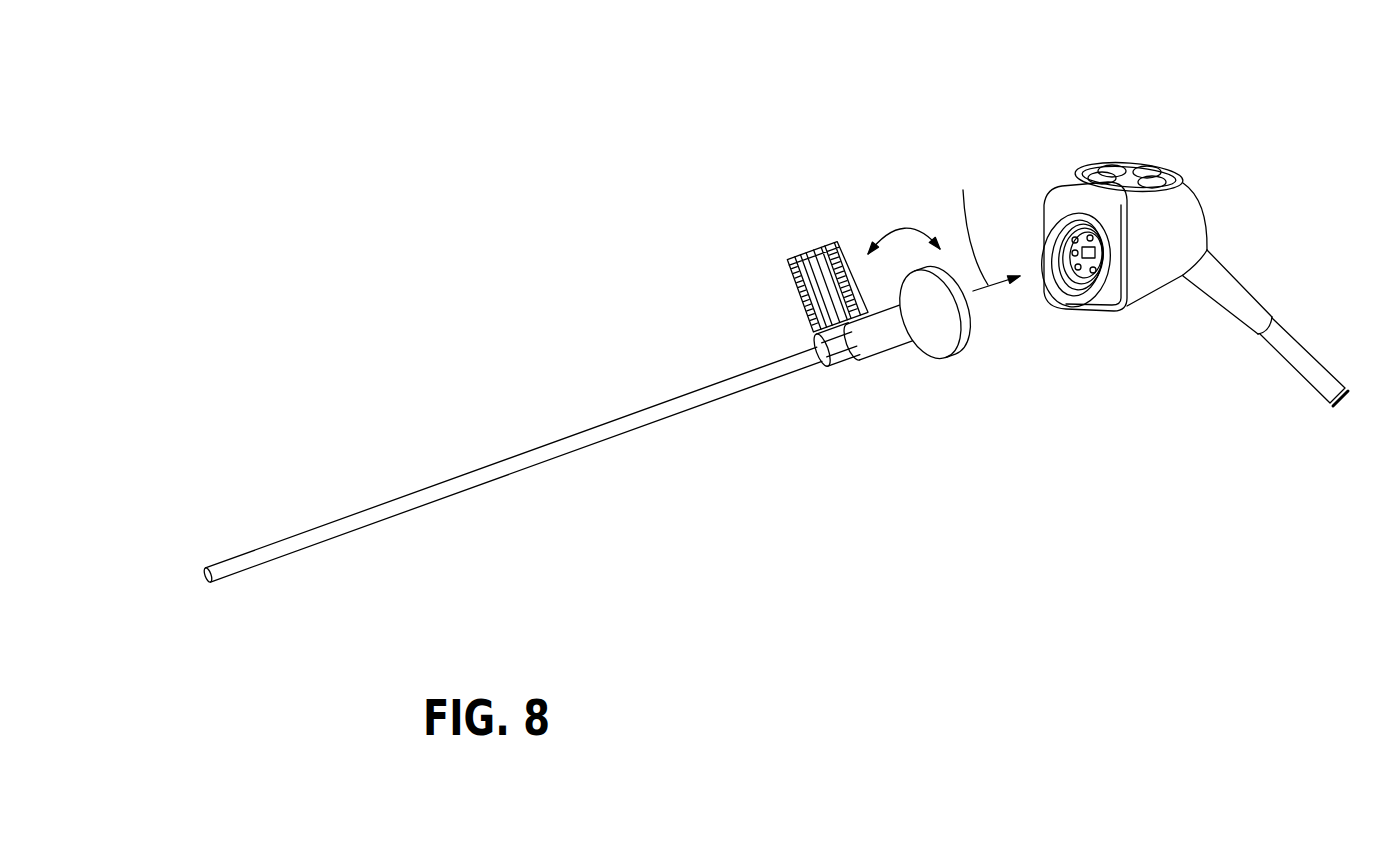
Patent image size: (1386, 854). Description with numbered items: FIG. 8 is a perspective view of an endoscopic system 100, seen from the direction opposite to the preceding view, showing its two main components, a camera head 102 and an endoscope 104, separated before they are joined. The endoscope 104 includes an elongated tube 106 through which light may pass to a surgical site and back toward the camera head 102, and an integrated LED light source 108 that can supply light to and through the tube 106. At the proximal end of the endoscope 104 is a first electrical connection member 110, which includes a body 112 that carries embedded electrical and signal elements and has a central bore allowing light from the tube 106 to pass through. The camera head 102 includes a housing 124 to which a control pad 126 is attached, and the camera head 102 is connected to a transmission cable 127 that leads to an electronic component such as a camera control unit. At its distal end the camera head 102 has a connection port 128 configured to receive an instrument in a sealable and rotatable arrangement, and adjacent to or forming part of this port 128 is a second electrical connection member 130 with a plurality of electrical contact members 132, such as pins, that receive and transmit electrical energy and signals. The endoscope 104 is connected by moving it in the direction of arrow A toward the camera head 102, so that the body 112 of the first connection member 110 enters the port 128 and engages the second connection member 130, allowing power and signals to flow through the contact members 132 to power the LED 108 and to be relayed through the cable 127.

The endoscopic system 100 is at (683, 178).
The camera head 102 is at (1188, 205).
The endoscope 104 is at (630, 378).
The elongated tube 106 is at (470, 480).
The integrated LED light source 108 is at (822, 247).
The first electrical connection member 110 is at (893, 333).
The body 112 is at (935, 337).
The housing 124 is at (1180, 233).
The control pad 126 is at (1135, 167).
The transmission cable 127 is at (1285, 347).
The connection port 128 is at (1070, 287).
The second electrical connection member 130 is at (1087, 297).
The electrical contact members 132 is at (1047, 215).